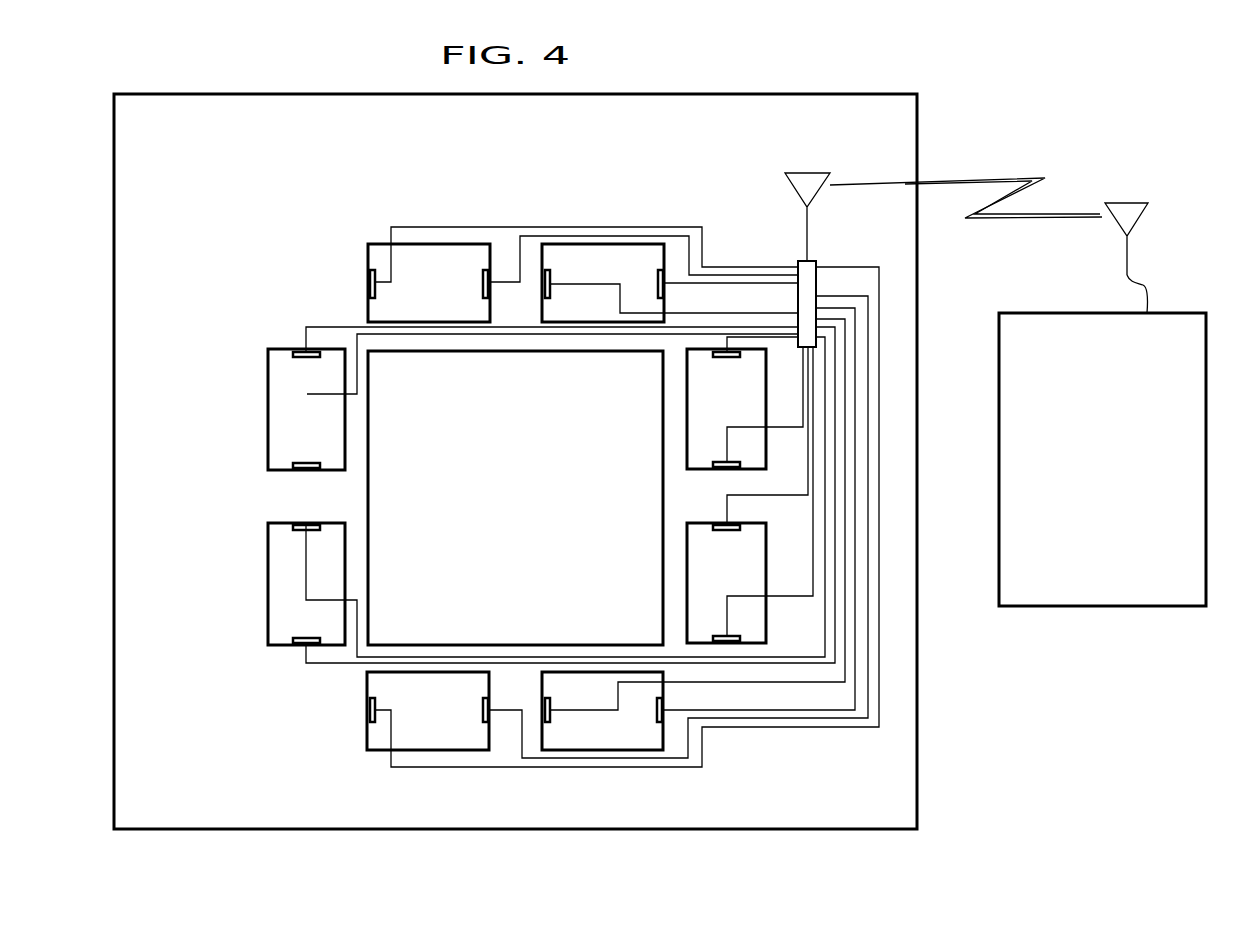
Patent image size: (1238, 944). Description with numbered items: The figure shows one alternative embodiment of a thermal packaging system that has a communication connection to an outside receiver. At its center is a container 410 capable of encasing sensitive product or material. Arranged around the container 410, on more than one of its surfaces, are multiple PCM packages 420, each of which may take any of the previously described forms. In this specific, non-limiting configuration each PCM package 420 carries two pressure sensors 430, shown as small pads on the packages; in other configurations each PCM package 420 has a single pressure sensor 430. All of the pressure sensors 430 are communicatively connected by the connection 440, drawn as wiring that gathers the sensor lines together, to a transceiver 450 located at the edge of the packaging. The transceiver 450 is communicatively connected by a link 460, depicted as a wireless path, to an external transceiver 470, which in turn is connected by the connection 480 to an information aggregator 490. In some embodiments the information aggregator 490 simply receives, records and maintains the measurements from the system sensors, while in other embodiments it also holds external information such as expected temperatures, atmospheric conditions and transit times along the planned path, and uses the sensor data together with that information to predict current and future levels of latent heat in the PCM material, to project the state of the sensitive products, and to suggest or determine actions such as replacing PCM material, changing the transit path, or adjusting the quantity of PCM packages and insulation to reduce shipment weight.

The container 410 is at (398, 602).
The PCM package 420 is at (281, 413).
The pressure sensor 430 is at (303, 357).
The communicative connection 440 is at (700, 711).
The transceiver 450 is at (807, 173).
The link 460 is at (1025, 178).
The external transceiver 470 is at (1127, 203).
The connection 480 is at (1145, 284).
The information aggregator 490 is at (1103, 607).